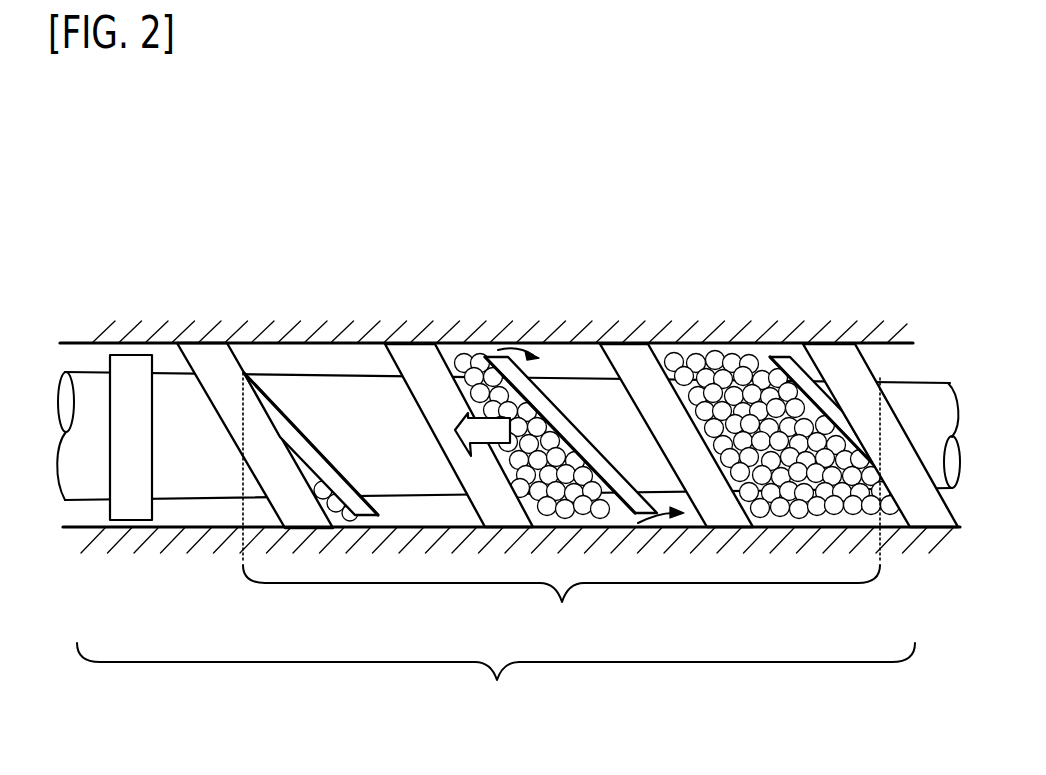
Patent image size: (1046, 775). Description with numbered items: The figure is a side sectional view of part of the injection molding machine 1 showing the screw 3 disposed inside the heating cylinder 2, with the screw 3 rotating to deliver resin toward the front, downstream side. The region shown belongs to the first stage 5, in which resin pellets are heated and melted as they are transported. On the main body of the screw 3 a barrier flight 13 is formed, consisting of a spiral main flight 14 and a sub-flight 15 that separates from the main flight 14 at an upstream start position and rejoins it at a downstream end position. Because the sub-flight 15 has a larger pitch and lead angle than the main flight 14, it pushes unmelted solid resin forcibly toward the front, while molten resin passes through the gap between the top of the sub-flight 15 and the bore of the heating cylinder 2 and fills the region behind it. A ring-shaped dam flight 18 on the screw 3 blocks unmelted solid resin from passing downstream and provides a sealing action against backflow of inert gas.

The injection molding machine 1 is at (828, 208).
The heating cylinder 2 is at (181, 343).
The screw 3 is at (313, 373).
The first stage 5 is at (496, 682).
The barrier flight 13 is at (561, 504).
The main flight 14 is at (407, 356).
The sub-flight 15 is at (530, 382).
The dam flight 18 is at (120, 352).